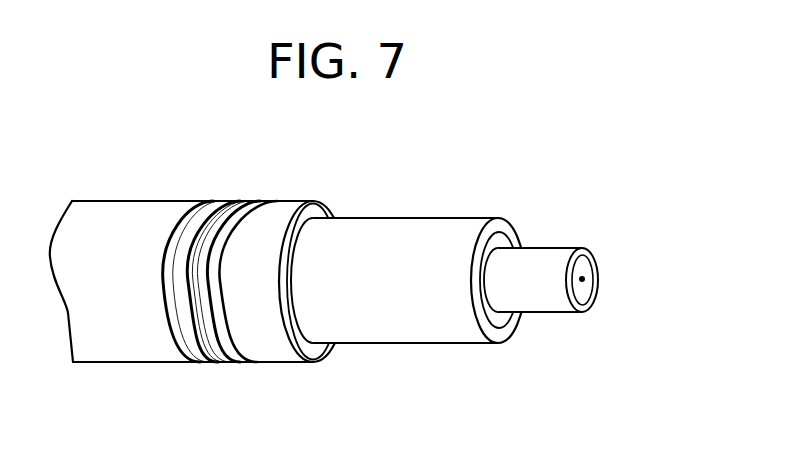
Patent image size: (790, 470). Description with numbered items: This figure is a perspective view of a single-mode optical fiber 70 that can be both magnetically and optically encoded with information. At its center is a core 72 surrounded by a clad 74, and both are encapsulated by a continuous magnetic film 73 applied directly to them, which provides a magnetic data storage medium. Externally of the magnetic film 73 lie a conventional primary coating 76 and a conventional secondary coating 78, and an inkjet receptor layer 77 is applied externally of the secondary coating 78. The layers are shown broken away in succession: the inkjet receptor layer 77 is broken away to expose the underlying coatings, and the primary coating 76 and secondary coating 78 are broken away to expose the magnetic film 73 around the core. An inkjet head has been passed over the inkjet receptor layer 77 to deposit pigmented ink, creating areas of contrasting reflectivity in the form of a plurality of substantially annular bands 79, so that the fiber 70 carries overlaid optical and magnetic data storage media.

The optical fiber 70 is at (649, 148).
The core 72 is at (586, 284).
The continuous magnetic film 73 is at (583, 269).
The clad 74 is at (588, 268).
The primary coating 76 is at (503, 243).
The inkjet receptor layer 77 is at (320, 212).
The secondary coating 78 is at (503, 333).
The substantially annular bands 79 is at (203, 362).